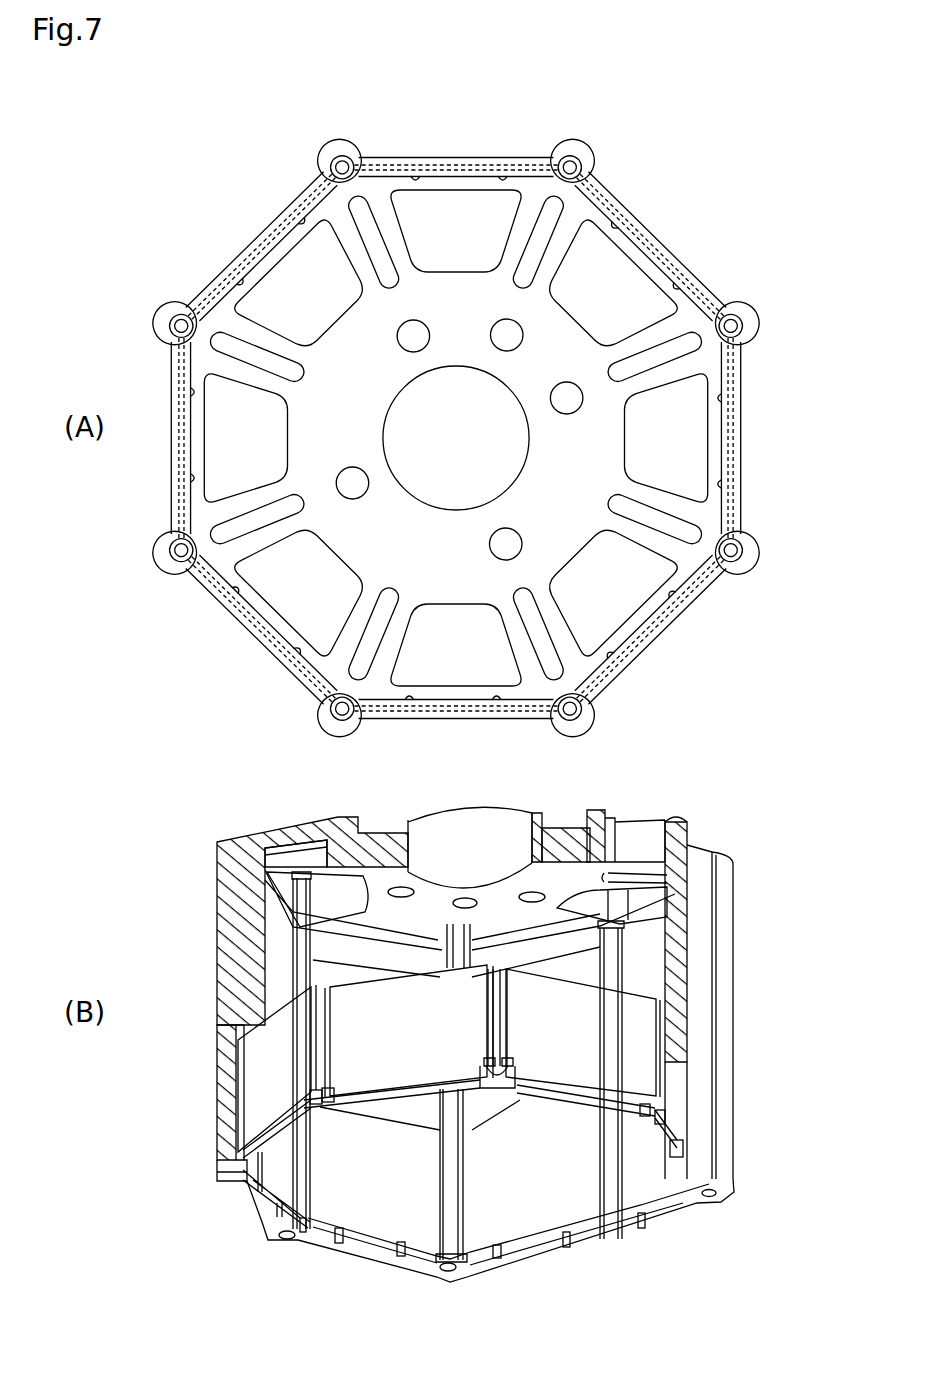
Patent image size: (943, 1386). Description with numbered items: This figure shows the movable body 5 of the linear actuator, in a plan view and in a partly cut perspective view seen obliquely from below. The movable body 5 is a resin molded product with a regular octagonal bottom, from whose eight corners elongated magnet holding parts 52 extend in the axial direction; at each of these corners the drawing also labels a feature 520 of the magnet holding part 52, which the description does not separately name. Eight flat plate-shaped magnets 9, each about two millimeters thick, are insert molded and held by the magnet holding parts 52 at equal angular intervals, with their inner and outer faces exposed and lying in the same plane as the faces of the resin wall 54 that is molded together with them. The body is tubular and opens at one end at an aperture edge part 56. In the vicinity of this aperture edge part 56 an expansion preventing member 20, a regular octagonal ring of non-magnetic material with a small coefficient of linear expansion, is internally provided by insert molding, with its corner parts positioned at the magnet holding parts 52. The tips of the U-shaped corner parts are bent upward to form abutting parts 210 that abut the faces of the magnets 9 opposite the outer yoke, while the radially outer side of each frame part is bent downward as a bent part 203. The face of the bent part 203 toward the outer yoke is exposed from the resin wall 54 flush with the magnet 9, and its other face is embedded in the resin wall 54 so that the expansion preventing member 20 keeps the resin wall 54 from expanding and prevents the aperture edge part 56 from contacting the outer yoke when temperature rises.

The movable body 5 is at (733, 193).
The magnet 9 is at (736, 373).
The magnet holding part 52 is at (742, 304).
The bolt hole 520 is at (743, 561).
The expansion preventing member 20 is at (615, 1150).
The abutting part 210 is at (508, 1072).
The bent part 203 is at (594, 1121).
The resin wall 54 is at (637, 1247).
The aperture edge part 56 is at (330, 1259).